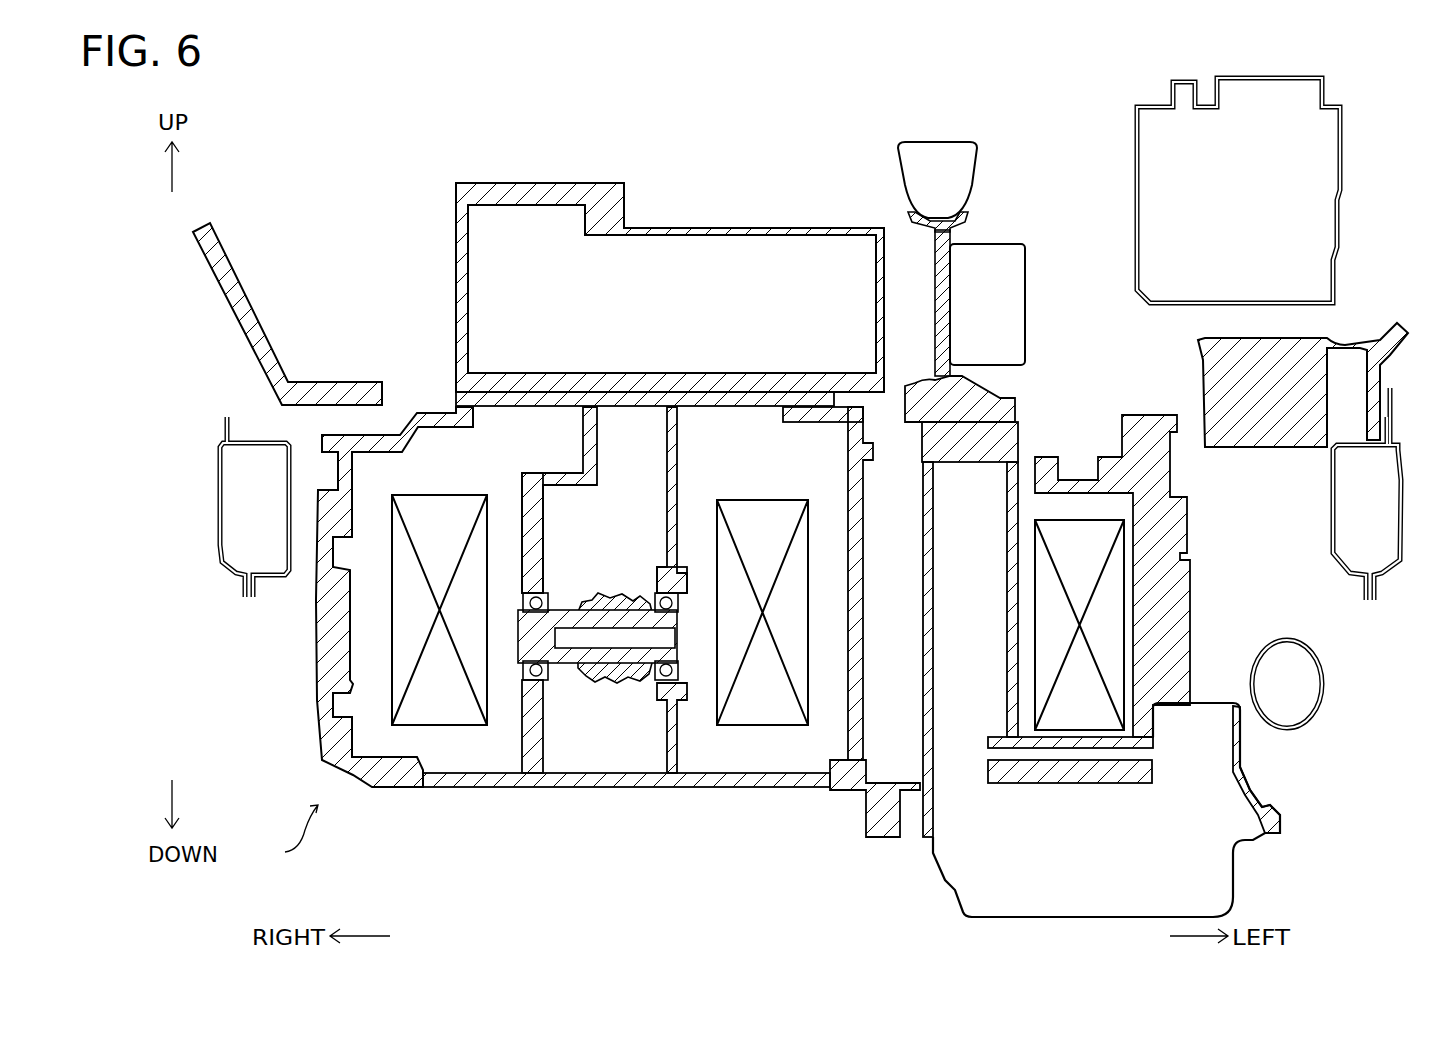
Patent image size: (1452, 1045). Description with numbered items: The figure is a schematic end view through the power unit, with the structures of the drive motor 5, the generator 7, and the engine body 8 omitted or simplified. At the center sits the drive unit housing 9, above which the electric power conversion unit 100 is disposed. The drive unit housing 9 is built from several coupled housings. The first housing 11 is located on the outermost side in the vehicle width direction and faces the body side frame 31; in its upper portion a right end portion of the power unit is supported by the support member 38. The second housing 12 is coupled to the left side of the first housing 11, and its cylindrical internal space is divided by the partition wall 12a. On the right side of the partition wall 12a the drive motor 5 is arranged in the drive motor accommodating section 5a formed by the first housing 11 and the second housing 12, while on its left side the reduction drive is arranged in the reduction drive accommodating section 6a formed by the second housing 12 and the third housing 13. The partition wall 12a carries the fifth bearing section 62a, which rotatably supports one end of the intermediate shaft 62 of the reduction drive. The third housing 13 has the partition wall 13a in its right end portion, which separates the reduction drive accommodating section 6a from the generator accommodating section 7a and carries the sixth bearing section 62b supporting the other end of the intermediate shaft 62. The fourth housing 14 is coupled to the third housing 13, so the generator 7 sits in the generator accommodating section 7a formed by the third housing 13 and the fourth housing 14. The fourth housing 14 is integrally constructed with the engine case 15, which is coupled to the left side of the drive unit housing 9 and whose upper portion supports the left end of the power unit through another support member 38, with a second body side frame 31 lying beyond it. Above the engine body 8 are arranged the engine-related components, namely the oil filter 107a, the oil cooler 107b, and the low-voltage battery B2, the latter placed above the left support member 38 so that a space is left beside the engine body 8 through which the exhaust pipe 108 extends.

The electric power conversion unit 100 is at (520, 183).
The oil filter 107a is at (953, 142).
The oil cooler 107b is at (1005, 244).
The low-voltage battery B2 is at (1340, 160).
The support member 38 is at (238, 318).
The body side frame 31 is at (220, 480).
The drive motor 5 is at (447, 495).
The drive motor accommodating section 5a is at (455, 753).
The generator 7 is at (760, 500).
The generator accommodating section 7a is at (771, 748).
The reduction drive accommodating section 6a is at (626, 748).
The intermediate shaft 62 is at (606, 738).
The fifth bearing section 62a is at (558, 680).
The sixth bearing section 62b is at (668, 690).
The drive unit housing 9 is at (290, 835).
The first housing 11 is at (388, 788).
The second housing 12 is at (497, 788).
The partition wall 12a is at (545, 558).
The third housing 13 is at (718, 788).
The partition wall 13a is at (668, 502).
The fourth housing 14 is at (840, 788).
The engine body 8 is at (993, 712).
The engine case 15 is at (1192, 527).
The exhaust pipe 108 is at (1323, 688).